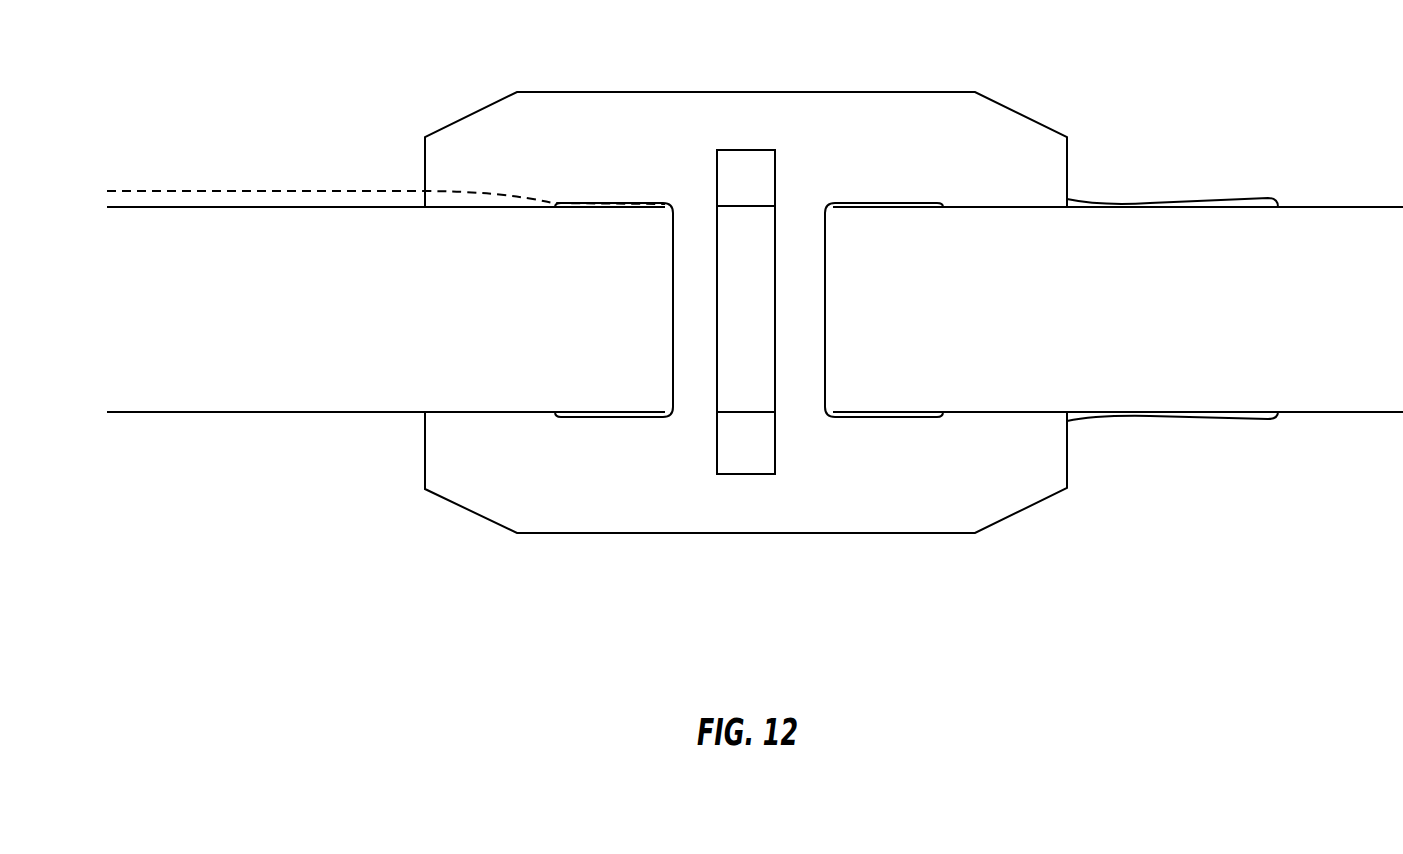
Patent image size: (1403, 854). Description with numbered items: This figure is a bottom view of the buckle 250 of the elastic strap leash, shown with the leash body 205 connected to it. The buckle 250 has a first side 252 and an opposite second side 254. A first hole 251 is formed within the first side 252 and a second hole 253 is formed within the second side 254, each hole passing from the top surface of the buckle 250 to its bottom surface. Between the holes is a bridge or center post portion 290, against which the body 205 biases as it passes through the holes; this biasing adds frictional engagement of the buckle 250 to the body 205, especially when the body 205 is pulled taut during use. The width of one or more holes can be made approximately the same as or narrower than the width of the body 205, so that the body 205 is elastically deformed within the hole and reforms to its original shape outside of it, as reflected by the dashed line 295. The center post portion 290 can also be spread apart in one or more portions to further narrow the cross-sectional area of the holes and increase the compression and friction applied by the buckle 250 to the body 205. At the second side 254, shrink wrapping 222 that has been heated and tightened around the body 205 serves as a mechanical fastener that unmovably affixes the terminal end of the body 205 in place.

The body 205 is at (314, 328).
The shrink wrapping 222 is at (1264, 199).
The buckle 250 is at (746, 339).
The first hole 251 is at (582, 430).
The first side 252 is at (366, 494).
The second hole 253 is at (903, 430).
The second side 254 is at (1100, 497).
The center post portion 290 is at (686, 336).
The dashed line 295 is at (483, 178).